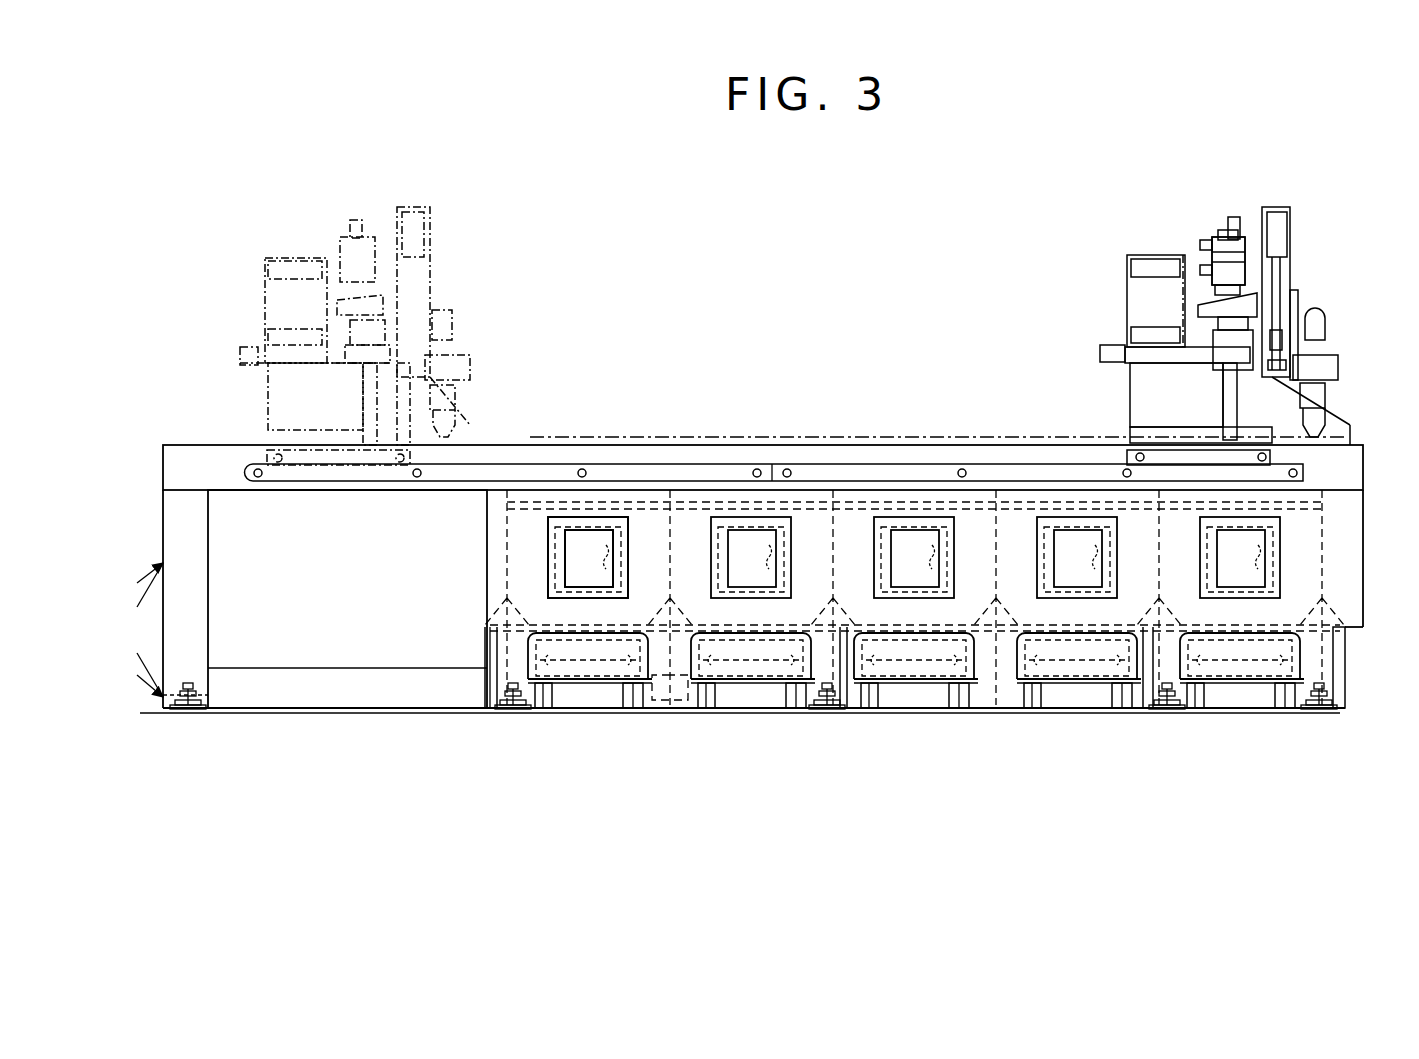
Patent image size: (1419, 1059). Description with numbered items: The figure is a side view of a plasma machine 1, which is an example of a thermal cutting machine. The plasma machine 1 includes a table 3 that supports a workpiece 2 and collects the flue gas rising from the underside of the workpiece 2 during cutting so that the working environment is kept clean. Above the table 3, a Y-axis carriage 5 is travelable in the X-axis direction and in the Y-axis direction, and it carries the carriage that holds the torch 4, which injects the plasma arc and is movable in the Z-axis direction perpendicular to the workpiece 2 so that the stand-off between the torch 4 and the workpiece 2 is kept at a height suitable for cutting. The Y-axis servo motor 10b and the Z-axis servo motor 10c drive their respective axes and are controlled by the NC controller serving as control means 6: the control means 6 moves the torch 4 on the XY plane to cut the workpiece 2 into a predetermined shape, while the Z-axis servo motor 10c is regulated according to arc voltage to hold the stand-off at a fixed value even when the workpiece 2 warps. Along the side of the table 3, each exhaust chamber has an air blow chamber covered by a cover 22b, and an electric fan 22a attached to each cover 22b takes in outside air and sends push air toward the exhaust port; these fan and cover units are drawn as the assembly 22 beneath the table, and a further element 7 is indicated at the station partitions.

The plasma machine 1 is at (1237, 281).
The workpiece 2 is at (600, 435).
The table 3 is at (1307, 553).
The torch 4 is at (1312, 405).
The Y-axis carriage 5 is at (1213, 343).
The control means 6 is at (338, 638).
The partition 7 is at (678, 538).
The Y-axis servo motor 10b is at (1223, 268).
The Z-axis servo motor 10c is at (1278, 233).
The work station 22 is at (608, 676).
The electric fan 22a is at (590, 572).
The cover 22b is at (625, 605).